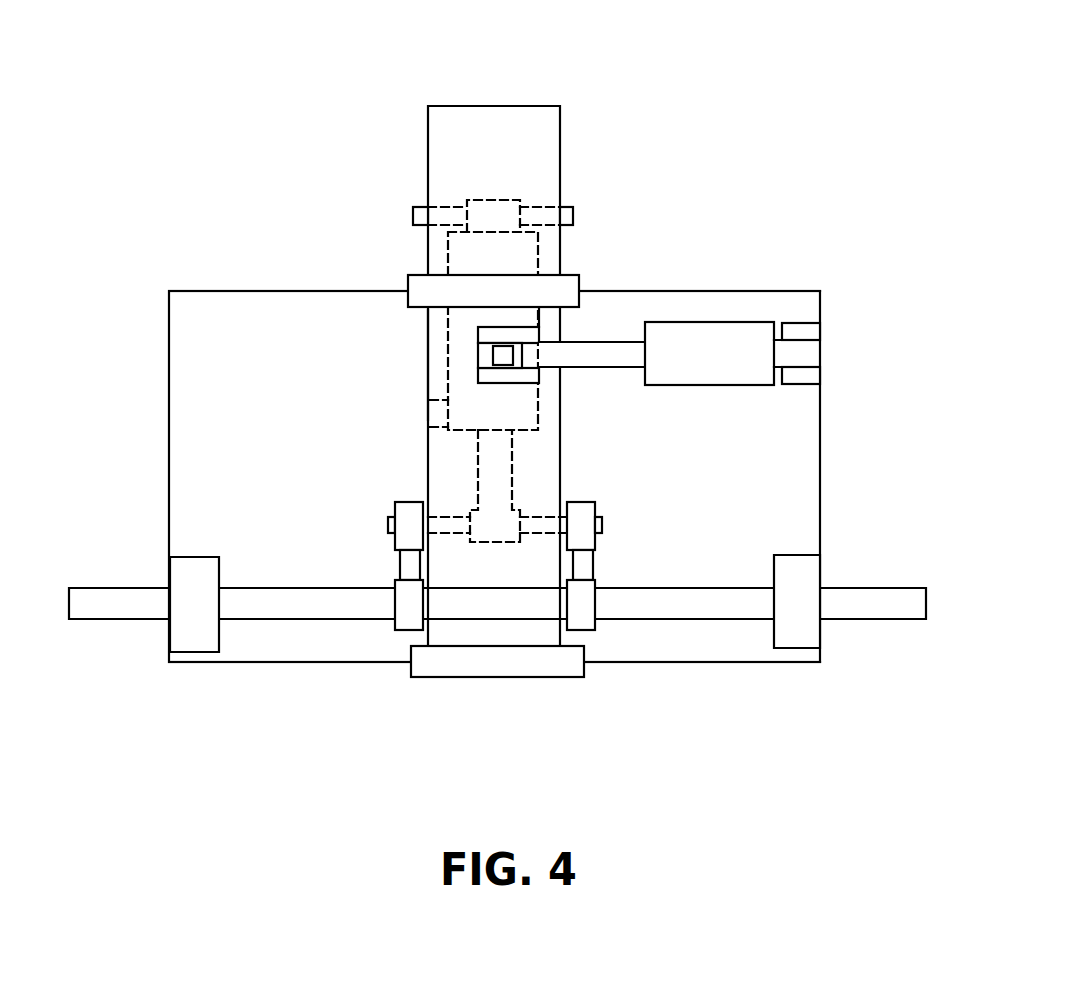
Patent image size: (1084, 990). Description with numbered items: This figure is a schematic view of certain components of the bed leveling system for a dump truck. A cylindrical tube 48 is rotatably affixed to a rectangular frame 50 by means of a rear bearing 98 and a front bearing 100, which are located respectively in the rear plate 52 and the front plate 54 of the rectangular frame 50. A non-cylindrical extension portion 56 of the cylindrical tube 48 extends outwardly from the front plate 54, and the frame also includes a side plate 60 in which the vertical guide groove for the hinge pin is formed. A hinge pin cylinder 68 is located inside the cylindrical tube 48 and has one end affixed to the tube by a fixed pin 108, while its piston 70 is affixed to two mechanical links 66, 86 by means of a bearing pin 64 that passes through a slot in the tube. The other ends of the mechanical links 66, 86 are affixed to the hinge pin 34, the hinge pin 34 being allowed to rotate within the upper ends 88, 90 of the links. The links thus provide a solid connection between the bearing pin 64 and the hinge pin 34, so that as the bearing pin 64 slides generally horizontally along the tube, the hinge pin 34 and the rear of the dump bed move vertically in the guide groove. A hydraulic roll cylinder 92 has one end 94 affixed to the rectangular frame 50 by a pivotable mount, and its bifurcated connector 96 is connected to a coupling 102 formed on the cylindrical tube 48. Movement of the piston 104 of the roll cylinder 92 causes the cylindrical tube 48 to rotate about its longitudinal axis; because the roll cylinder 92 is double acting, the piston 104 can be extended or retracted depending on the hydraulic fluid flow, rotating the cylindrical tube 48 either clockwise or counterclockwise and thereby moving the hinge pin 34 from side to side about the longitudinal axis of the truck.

The hinge pin 34 is at (125, 610).
The cylindrical tube 48 is at (428, 333).
The rectangular frame 50 is at (789, 262).
The rear plate 52 is at (733, 660).
The front plate 54 is at (702, 288).
The non-cylindrical extension portion 56 is at (427, 151).
The side plate 60 is at (168, 460).
The bearing pin 64 is at (602, 525).
The mechanical link 66 is at (408, 568).
The hinge pin cylinder 68 is at (538, 250).
The piston 70 is at (508, 458).
The mechanical link 86 is at (595, 561).
The upper end 88 is at (402, 625).
The upper end 90 is at (597, 623).
The hydraulic roll cylinder 92 is at (713, 370).
The end 94 is at (798, 377).
The bifurcated connector 96 is at (520, 378).
The rear bearing 98 is at (453, 672).
The front bearing 100 is at (420, 282).
The coupling 102 is at (485, 356).
The piston 104 is at (597, 353).
The fixed pin 108 is at (572, 212).